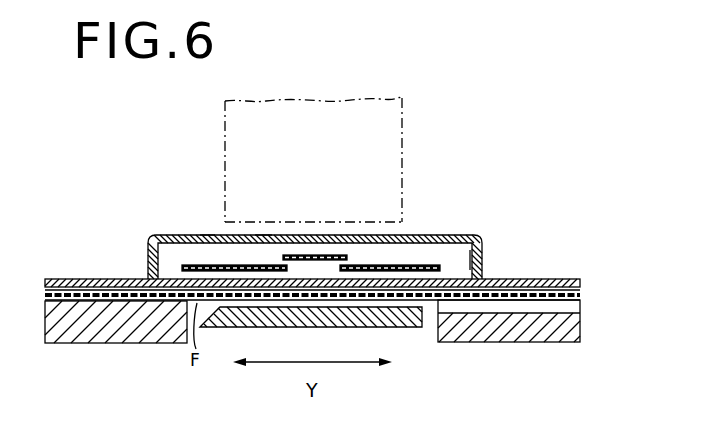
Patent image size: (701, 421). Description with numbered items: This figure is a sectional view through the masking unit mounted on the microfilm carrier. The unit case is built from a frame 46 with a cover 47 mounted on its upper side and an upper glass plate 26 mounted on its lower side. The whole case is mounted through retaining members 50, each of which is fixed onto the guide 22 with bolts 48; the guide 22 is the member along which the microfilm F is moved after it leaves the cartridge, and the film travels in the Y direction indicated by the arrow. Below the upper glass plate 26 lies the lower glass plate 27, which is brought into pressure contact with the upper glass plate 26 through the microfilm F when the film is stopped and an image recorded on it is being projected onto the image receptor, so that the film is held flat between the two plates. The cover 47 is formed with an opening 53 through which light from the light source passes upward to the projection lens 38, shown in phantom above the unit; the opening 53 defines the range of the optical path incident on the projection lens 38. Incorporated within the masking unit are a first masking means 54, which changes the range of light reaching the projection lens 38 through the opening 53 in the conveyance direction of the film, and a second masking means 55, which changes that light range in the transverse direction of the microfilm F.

The guide 22 is at (117, 333).
The glass plate 26 is at (478, 257).
The lower glass plate 27 is at (412, 329).
The projection lens 38 is at (308, 106).
The frame 46 is at (148, 238).
The cover 47 is at (208, 235).
The bolts 48 is at (86, 281).
The retaining members 50 is at (146, 261).
The opening 53 is at (264, 234).
The first masking means 54 is at (391, 265).
The second masking means 55 is at (336, 254).